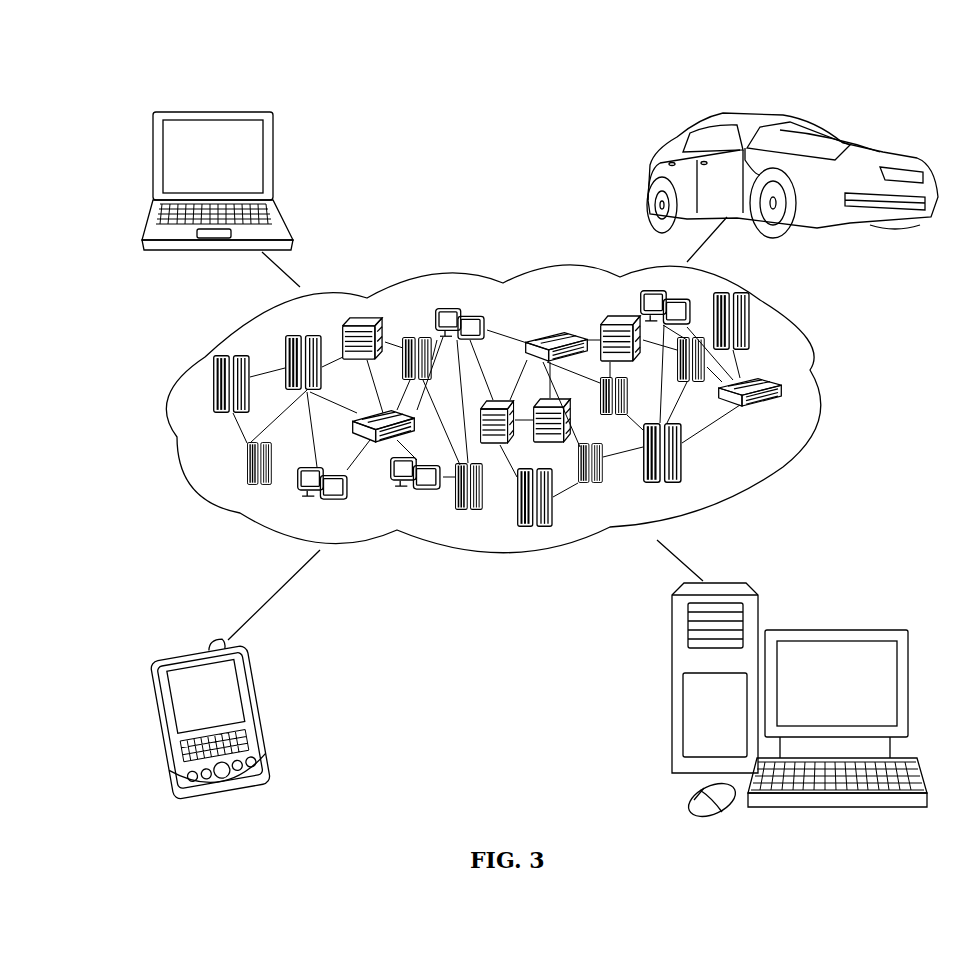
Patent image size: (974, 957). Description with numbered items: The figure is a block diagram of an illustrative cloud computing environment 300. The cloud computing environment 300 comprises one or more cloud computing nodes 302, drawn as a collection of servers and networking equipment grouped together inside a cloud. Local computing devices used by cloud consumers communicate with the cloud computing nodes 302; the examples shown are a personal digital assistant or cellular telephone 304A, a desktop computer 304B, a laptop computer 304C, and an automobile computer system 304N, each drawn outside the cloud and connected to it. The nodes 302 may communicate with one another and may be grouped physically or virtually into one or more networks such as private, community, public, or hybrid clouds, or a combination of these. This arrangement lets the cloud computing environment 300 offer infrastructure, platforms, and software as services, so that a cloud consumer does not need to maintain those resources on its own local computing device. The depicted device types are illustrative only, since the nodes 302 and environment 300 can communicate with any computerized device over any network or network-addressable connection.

The cloud computing environment 300 is at (108, 98).
The cloud computing nodes 302 is at (790, 420).
The personal digital assistant (PDA) or cellular telephone 304A is at (253, 683).
The desktop computer 304B is at (823, 628).
The laptop computer 304C is at (274, 142).
The automobile computer system 304N is at (648, 177).